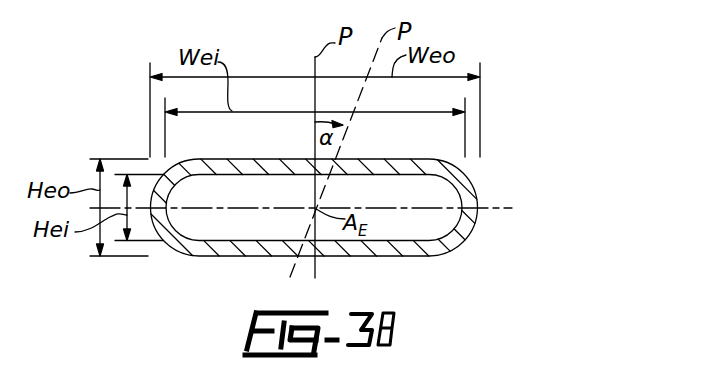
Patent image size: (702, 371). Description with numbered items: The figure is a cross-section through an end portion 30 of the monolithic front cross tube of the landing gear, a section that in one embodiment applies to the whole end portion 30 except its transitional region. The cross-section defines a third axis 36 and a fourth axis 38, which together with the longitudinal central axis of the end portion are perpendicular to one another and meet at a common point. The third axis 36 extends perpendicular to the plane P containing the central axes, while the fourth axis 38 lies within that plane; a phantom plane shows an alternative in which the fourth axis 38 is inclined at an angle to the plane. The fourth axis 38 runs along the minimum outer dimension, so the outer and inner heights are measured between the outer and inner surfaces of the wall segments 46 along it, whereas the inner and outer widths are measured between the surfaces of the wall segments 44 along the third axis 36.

The end portion 30 is at (497, 177).
The third axis 36 is at (497, 208).
The fourth axis 38 is at (315, 108).
The wall segments 44 is at (479, 208).
The wall segments 46 is at (410, 256).